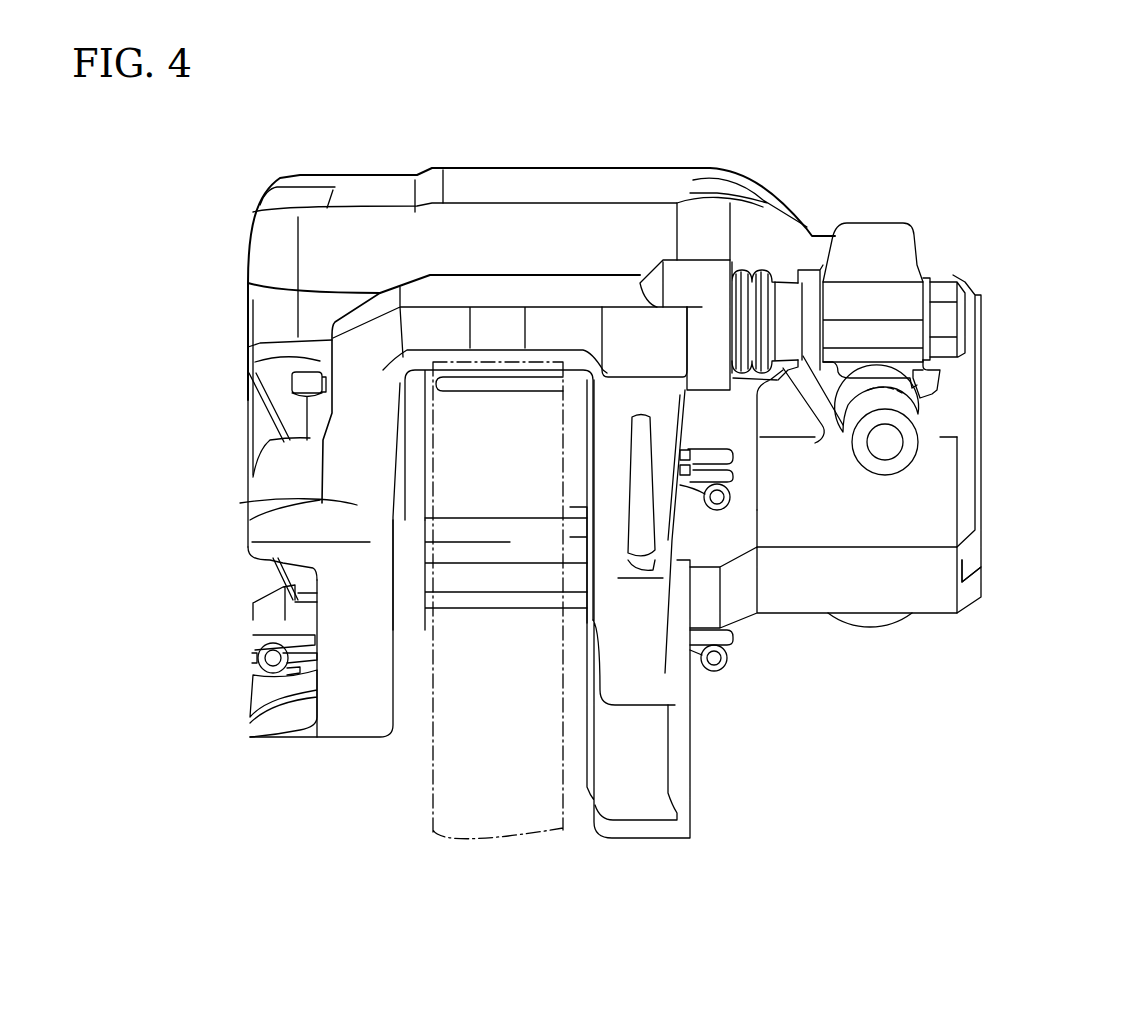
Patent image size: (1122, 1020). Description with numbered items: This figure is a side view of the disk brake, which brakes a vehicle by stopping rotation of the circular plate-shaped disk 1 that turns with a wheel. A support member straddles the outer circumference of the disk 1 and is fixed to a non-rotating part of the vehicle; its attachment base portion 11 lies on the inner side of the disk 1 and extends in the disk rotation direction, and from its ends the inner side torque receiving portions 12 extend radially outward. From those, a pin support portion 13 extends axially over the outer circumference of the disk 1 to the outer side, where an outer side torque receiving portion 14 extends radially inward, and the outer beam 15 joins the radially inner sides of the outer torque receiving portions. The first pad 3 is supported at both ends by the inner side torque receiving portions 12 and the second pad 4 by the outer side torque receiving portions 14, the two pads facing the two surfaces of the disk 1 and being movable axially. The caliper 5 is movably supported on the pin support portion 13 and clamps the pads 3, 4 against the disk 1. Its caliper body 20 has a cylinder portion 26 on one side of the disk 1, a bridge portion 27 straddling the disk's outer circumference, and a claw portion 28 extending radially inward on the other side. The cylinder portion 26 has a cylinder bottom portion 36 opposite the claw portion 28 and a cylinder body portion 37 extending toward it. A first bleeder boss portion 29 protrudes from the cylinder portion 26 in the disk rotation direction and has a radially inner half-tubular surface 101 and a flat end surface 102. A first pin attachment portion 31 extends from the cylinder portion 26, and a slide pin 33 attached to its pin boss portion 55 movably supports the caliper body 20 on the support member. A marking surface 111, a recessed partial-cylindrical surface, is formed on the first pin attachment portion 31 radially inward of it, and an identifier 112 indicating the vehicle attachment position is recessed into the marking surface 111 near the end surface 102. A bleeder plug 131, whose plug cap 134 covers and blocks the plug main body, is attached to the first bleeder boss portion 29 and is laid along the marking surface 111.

The disk 1 is at (432, 765).
The first pad 3 is at (578, 578).
The second pad 4 is at (410, 577).
The caliper 5 is at (918, 181).
The attachment base portion 11 is at (640, 790).
The inner side torque receiving portion 12 is at (640, 675).
The pin support portion 13 is at (500, 290).
The outer side torque receiving portion 14 is at (357, 505).
The outer beam 15 is at (252, 720).
The caliper body 20 is at (970, 276).
The cylinder portion 26 is at (893, 522).
The bridge portion 27 is at (553, 188).
The claw portion 28 is at (248, 403).
The first bleeder boss portion 29 is at (912, 465).
The first pin attachment portion 31 is at (887, 243).
The slide pin 33 is at (945, 323).
The cylinder bottom portion 36 is at (983, 577).
The cylinder body portion 37 is at (843, 520).
The pin boss portion 55 is at (870, 300).
The half-tubular surface 101 is at (910, 478).
The end surface 102 is at (923, 425).
The marking surface 111 is at (825, 437).
The identifier 112 is at (917, 398).
The bleeder plug 131 is at (873, 490).
The plug cap 134 is at (880, 443).